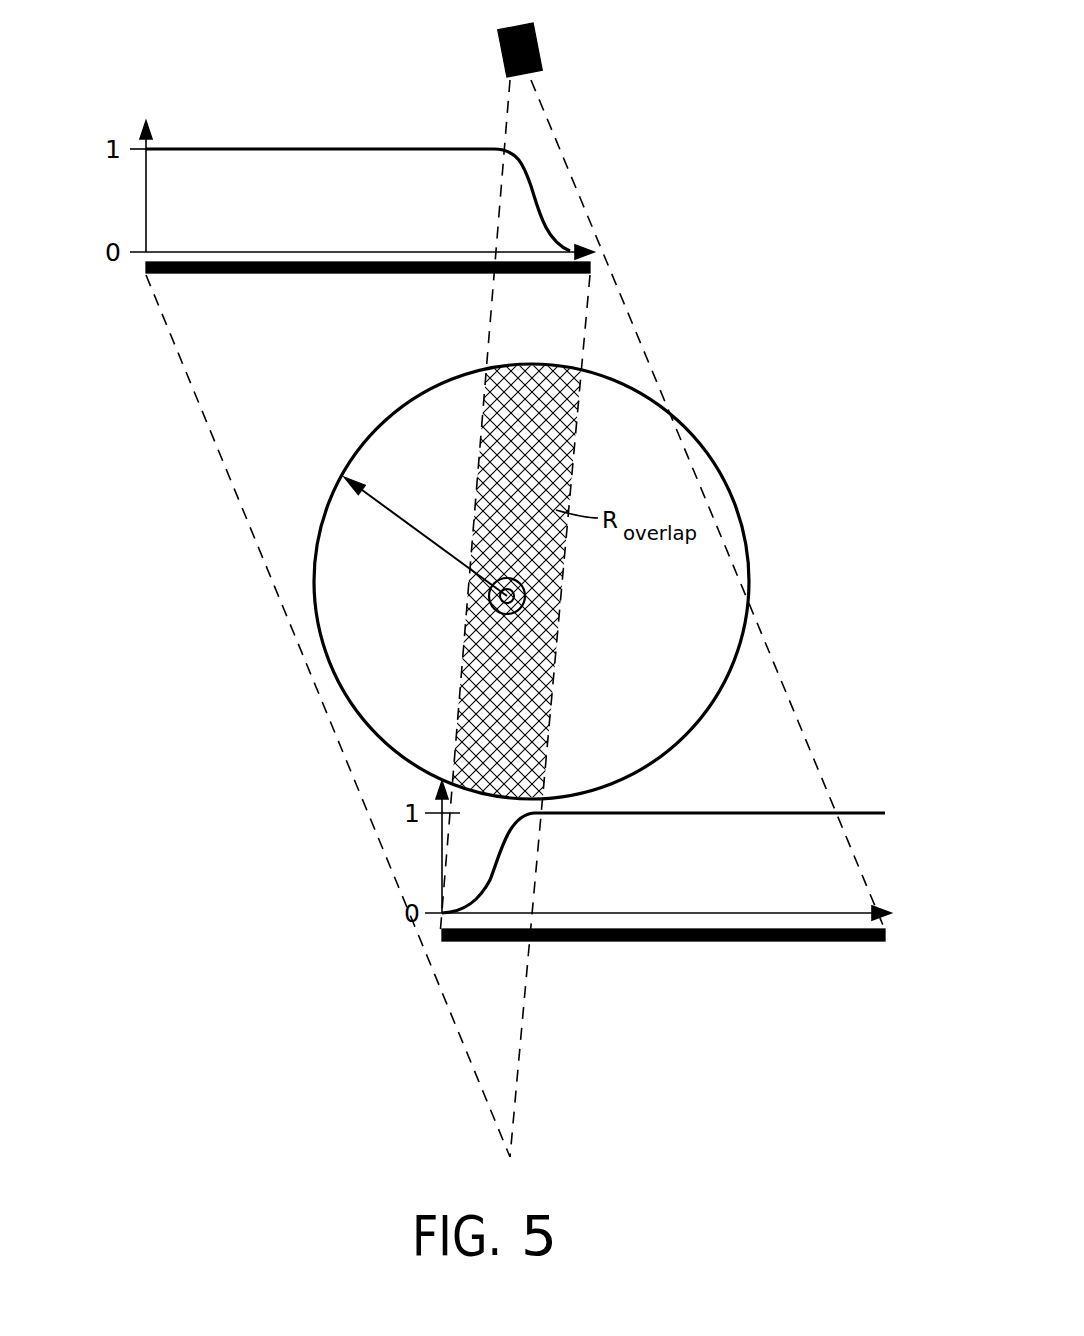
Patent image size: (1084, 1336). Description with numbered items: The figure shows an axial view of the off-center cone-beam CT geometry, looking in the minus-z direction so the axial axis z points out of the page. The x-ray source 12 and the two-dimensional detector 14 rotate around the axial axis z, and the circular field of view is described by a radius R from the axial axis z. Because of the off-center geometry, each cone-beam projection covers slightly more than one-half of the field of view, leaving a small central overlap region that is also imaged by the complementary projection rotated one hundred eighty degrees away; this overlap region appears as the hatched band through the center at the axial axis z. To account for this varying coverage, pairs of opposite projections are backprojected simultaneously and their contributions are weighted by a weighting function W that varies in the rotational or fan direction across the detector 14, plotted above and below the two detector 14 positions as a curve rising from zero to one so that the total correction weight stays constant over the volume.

The x-ray source 12 is at (539, 48).
The two-dimensional detector 14 is at (732, 941).
The weighting function W is at (298, 148).
The radius R is at (425, 536).
The axial axis z is at (517, 596).